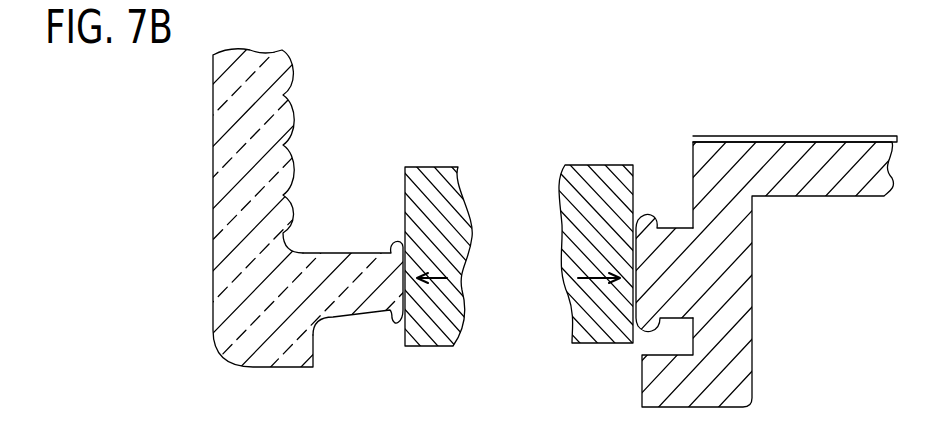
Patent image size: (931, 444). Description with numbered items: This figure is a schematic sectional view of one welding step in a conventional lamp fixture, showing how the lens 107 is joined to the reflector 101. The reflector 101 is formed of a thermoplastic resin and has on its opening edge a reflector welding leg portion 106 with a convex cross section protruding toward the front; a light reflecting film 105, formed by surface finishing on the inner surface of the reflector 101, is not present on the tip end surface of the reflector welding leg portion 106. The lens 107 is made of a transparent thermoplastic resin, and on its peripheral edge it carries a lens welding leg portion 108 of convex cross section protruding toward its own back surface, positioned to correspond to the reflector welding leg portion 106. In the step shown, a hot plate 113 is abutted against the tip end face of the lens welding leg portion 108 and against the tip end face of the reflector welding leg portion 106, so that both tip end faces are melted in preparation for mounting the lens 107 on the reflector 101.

The reflector 101 is at (642, 222).
The light reflecting film 105 is at (722, 135).
The reflector welding leg portion 106 is at (683, 300).
The lens 107 is at (389, 222).
The lens welding leg portion 108 is at (357, 272).
The hot plate 113 is at (426, 323).